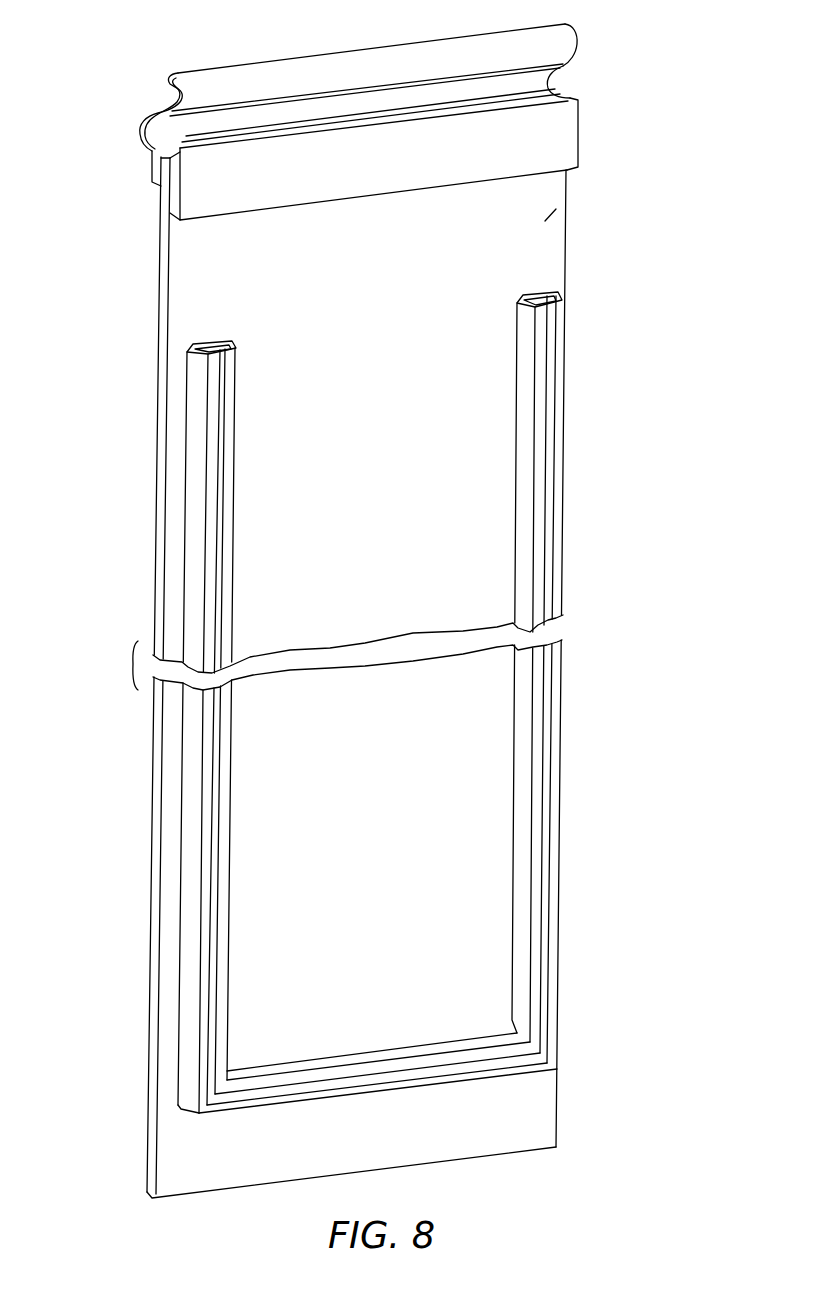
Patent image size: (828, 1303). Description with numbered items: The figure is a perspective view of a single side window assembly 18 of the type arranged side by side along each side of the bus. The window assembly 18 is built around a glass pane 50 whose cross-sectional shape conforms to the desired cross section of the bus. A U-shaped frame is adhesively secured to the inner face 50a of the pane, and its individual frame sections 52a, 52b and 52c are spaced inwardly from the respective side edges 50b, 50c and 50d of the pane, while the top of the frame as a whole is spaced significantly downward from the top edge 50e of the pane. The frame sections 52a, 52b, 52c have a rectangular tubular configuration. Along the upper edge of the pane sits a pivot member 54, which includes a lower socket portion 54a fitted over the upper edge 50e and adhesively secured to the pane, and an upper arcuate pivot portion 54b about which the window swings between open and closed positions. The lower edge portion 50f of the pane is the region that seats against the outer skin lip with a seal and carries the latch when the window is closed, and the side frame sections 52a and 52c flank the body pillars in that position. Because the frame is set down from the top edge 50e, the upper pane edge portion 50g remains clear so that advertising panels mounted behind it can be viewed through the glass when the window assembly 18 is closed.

The window assembly 18 is at (592, 400).
The glass pane 50 is at (566, 262).
The inner face of the pane 50a is at (372, 278).
The side edge of the pane 50b is at (157, 549).
The side edge of the pane 50c is at (567, 290).
The side edge of the pane 50d is at (507, 1150).
The top edge of the pane 50e is at (163, 155).
The lower edge portion of the pane 50f is at (538, 1089).
The upper pane edge portion 50g is at (548, 216).
The frame section 52a is at (195, 432).
The frame section 52b is at (393, 1090).
The frame section 52c is at (560, 572).
The pivot member 54 is at (239, 64).
The lower socket portion 54a is at (571, 99).
The upper arcuate pivot portion 54b is at (356, 48).